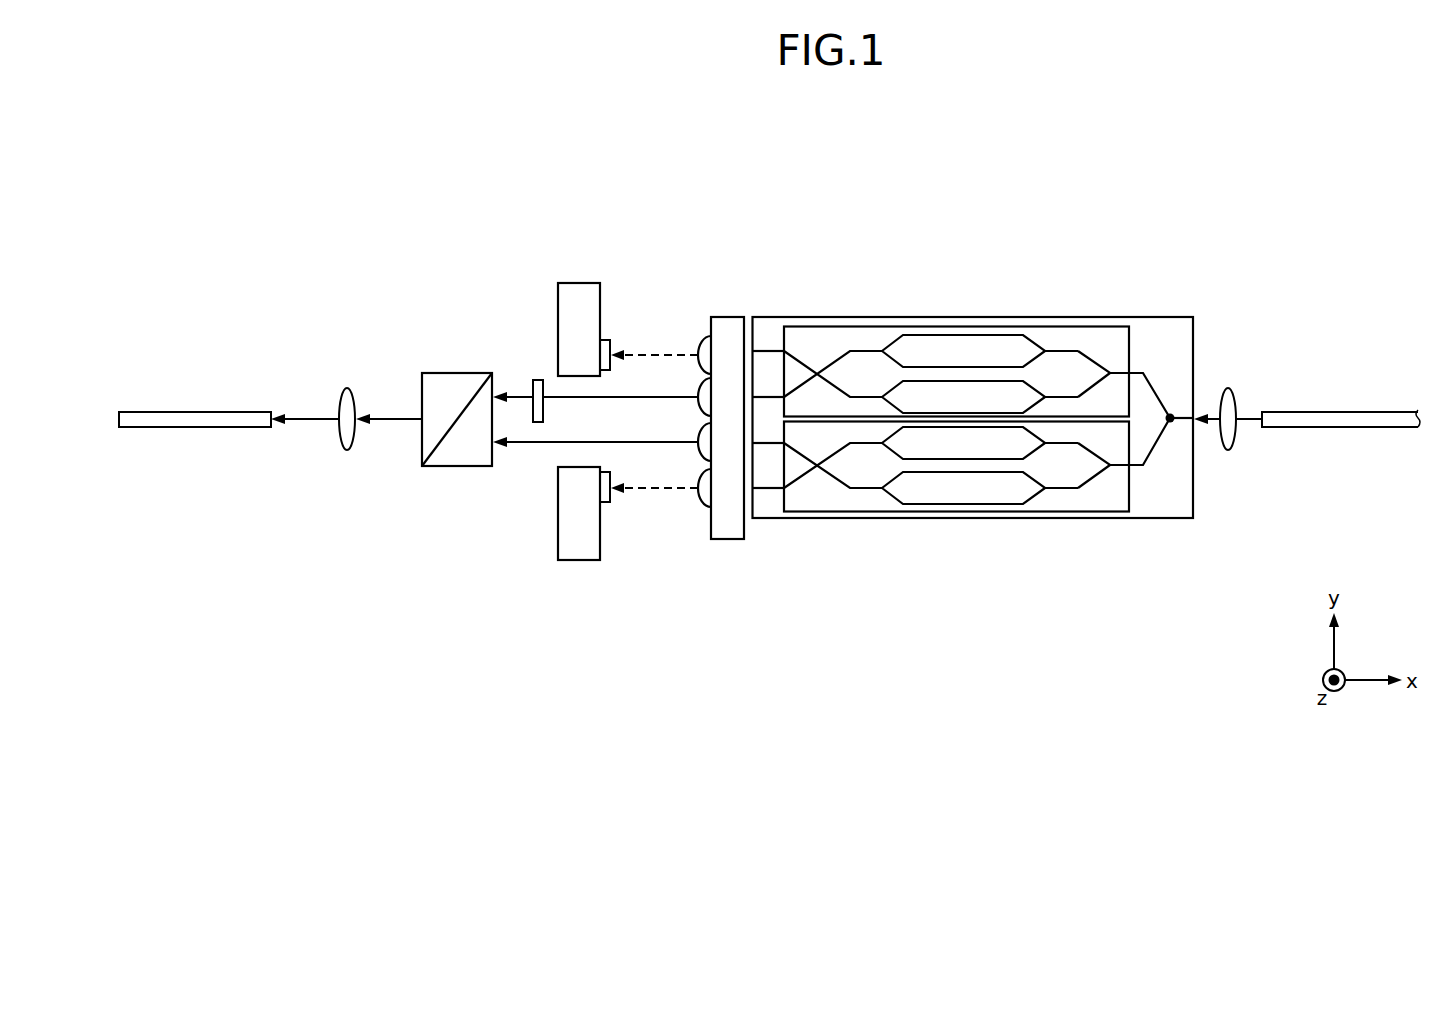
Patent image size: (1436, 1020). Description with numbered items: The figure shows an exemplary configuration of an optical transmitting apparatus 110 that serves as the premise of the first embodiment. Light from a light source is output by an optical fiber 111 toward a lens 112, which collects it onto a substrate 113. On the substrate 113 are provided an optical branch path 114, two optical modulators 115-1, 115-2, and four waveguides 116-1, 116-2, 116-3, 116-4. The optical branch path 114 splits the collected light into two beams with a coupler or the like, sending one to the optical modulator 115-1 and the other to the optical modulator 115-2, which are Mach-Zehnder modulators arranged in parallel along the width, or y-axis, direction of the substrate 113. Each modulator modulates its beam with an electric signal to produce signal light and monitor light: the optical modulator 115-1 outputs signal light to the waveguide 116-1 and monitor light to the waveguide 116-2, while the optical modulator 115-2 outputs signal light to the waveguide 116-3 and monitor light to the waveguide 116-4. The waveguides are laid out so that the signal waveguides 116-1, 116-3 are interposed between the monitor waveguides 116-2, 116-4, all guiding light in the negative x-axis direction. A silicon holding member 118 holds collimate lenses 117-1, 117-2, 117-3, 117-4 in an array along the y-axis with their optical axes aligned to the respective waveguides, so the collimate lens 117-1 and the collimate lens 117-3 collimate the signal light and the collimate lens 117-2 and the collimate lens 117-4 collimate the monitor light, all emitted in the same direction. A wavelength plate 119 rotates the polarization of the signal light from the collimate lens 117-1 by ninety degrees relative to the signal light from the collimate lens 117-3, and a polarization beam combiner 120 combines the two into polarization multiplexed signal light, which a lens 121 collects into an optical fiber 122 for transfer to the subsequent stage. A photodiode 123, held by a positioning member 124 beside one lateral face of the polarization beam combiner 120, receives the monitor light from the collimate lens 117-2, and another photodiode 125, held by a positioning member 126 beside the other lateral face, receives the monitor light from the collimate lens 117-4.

The optical transmitting apparatus 110 is at (1180, 166).
The optical fiber 111 is at (1352, 410).
The lens 112 is at (1228, 388).
The substrate 113 is at (1165, 316).
The optical branch path 114 is at (1171, 423).
The optical modulator 115-1 is at (1130, 340).
The optical modulator 115-2 is at (1130, 490).
The waveguide 116-1 is at (785, 340).
The waveguide 116-2 is at (768, 396).
The waveguide 116-3 is at (787, 488).
The waveguide 116-4 is at (765, 489).
The collimate lens 117-1 is at (698, 391).
The collimate lens 117-2 is at (697, 344).
The collimate lens 117-3 is at (697, 452).
The collimate lens 117-4 is at (695, 504).
The holding member 118 is at (728, 317).
The wavelength plate 119 is at (537, 380).
The polarization beam combiner 120 is at (447, 372).
The lens 121 is at (343, 383).
The optical fiber 122 is at (175, 411).
The photodiode 123 is at (604, 340).
The positioning member 124 is at (578, 283).
The photodiode 125 is at (604, 504).
The positioning member 126 is at (578, 564).